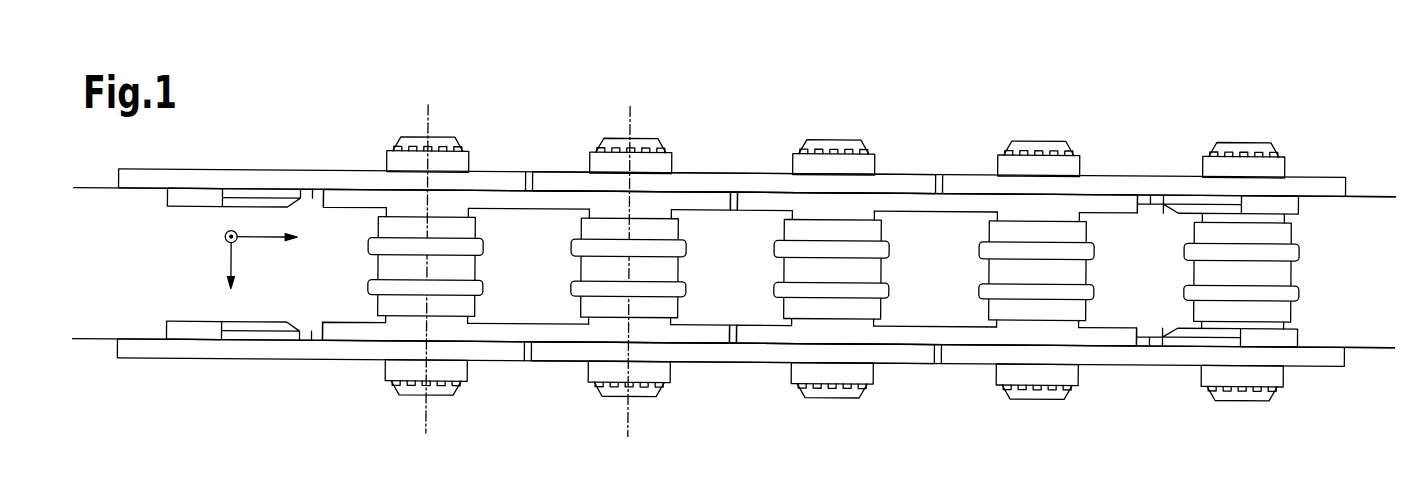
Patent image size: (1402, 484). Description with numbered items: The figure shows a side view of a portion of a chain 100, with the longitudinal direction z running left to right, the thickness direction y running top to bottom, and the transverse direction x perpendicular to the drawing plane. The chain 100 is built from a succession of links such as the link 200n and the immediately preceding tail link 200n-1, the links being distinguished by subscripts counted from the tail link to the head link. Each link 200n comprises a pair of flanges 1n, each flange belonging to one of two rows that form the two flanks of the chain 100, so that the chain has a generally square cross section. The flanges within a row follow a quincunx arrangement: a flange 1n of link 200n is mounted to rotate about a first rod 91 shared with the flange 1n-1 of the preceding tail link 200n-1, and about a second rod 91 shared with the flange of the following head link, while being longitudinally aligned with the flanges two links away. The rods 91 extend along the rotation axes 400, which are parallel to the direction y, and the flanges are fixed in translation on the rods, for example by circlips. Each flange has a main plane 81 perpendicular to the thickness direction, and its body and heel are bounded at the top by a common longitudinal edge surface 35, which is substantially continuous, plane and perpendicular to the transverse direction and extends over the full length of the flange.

The chain 100 is at (466, 114).
The immediately preceding tail link 200n-1 is at (683, 55).
The link 200n is at (887, 102).
The flange of the preceding tail link 1n-1 is at (540, 187).
The flange 1n is at (800, 428).
The rotation axis 400 is at (425, 412).
The rod 91 is at (608, 399).
The longitudinal edge surface 35 is at (721, 357).
The main plane 81 is at (1366, 210).